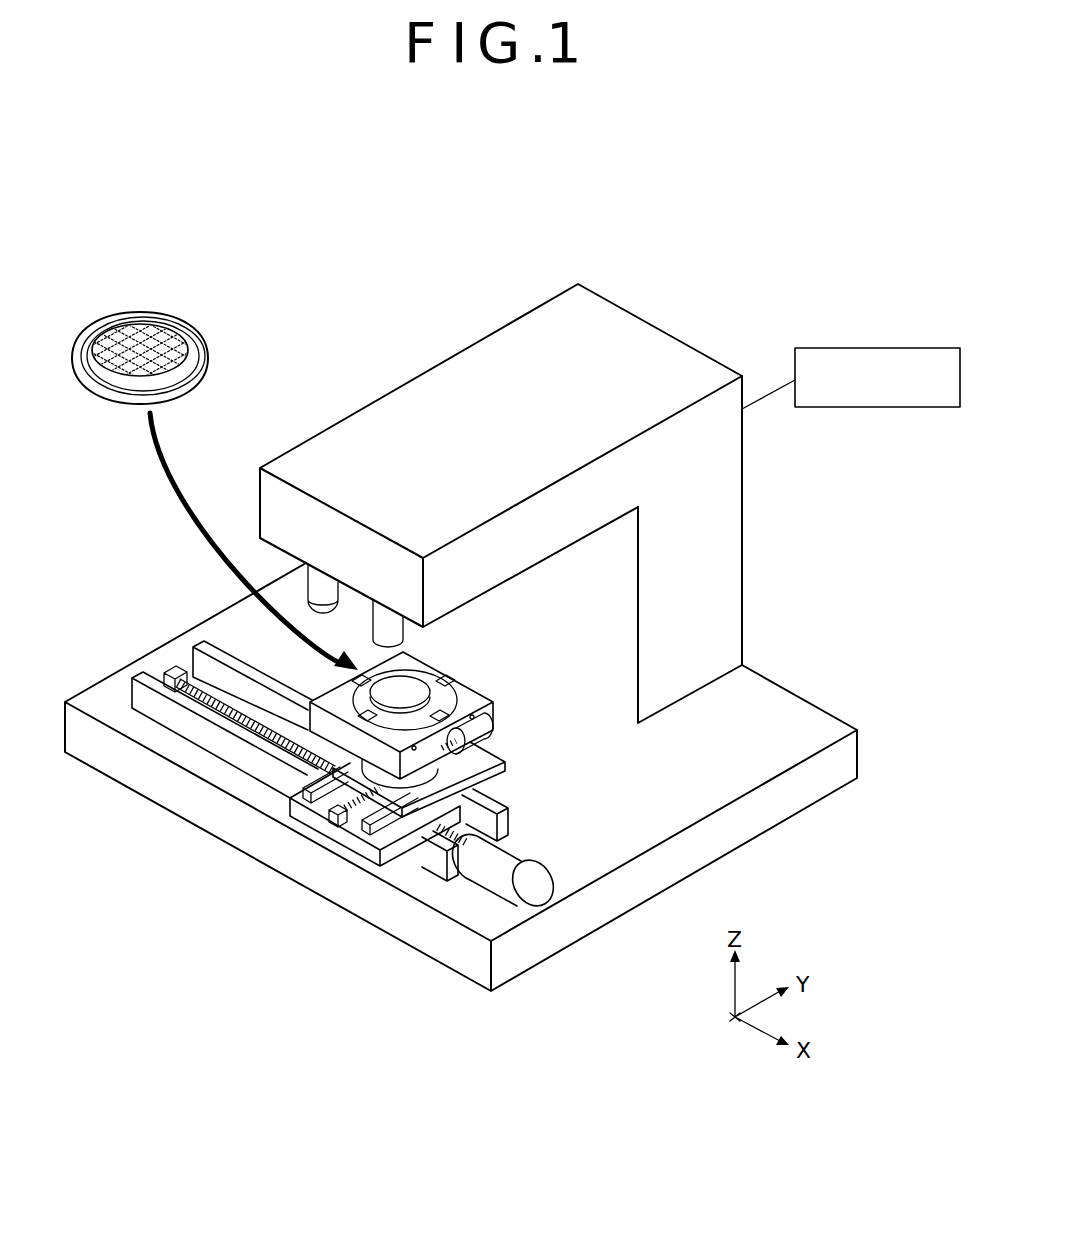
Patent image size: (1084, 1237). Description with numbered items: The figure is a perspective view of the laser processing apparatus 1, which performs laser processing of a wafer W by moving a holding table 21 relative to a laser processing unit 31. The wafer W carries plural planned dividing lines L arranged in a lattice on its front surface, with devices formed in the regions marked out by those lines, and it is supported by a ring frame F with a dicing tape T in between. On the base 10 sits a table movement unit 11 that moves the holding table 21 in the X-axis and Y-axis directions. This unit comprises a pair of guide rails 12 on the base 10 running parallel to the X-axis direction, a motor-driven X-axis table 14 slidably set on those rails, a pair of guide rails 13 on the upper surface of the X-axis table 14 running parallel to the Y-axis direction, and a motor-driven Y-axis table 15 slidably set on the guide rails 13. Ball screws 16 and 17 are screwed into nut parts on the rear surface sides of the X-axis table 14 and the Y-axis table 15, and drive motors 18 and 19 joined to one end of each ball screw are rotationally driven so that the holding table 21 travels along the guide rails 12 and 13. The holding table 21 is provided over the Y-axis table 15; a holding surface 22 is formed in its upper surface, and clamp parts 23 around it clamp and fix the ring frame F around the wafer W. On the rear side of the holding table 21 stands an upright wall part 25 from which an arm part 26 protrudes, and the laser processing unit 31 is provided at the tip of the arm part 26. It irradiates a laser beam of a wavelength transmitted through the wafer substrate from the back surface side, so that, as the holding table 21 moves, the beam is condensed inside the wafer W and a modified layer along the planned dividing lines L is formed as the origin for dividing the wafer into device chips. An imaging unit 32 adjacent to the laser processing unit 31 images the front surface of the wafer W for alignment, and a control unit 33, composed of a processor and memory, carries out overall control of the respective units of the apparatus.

The laser processing apparatus 1 is at (369, 239).
The base 10 is at (222, 620).
The table movement unit 11 is at (157, 630).
The guide rails 12 is at (175, 721).
The guide rails 13 is at (320, 797).
The X-axis table 14 is at (303, 817).
The Y-axis table 15 is at (463, 781).
The ball screw 16 is at (220, 703).
The ball screw 17 is at (357, 806).
The drive motor 18 is at (523, 852).
The drive motor 19 is at (473, 736).
The holding table 21 is at (463, 671).
The holding surface 22 is at (403, 686).
The clamp parts 23 is at (437, 717).
The upright wall part 25 is at (733, 515).
The arm part 26 is at (417, 392).
The laser processing unit 31 is at (314, 578).
The imaging unit 32 is at (378, 622).
The control unit 33 is at (905, 348).
The wafer W is at (98, 303).
The ring frame F is at (77, 343).
The dicing tape T is at (196, 350).
The planned dividing lines L is at (146, 330).